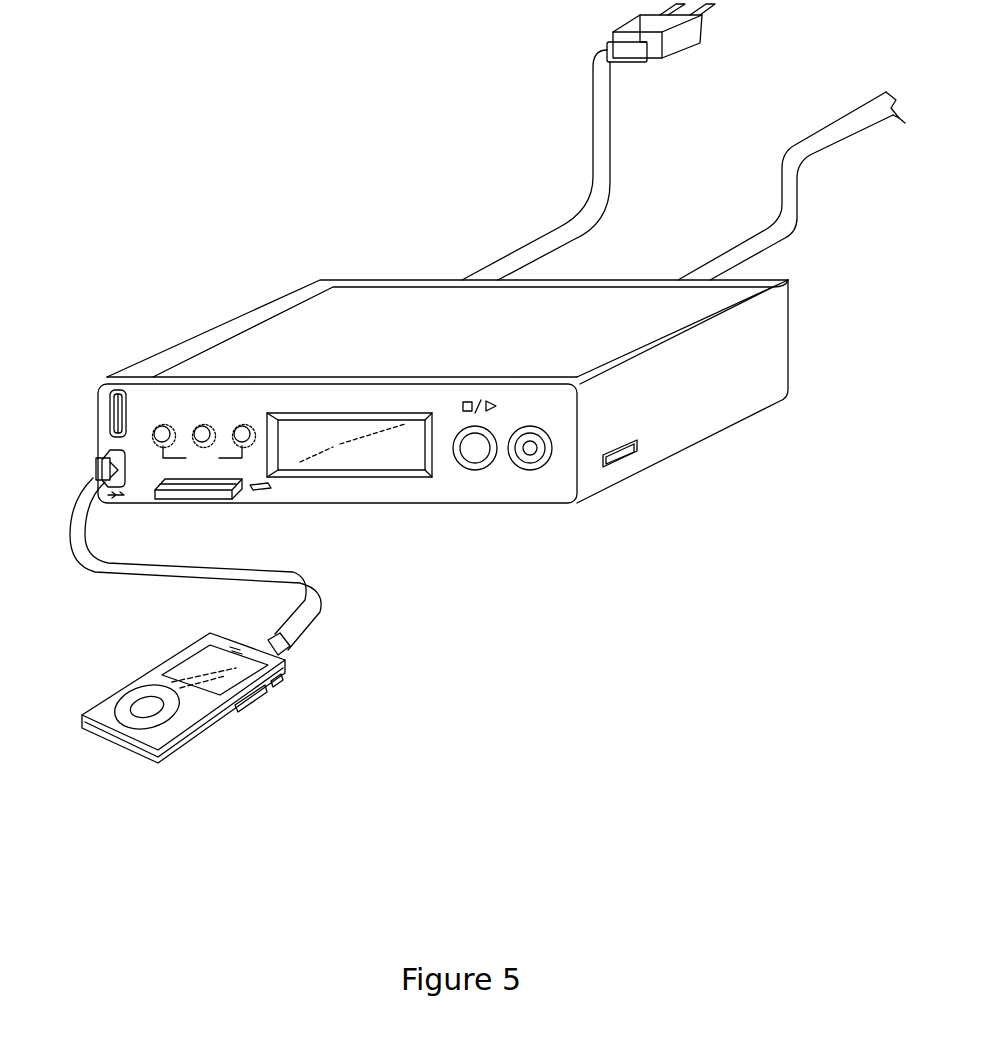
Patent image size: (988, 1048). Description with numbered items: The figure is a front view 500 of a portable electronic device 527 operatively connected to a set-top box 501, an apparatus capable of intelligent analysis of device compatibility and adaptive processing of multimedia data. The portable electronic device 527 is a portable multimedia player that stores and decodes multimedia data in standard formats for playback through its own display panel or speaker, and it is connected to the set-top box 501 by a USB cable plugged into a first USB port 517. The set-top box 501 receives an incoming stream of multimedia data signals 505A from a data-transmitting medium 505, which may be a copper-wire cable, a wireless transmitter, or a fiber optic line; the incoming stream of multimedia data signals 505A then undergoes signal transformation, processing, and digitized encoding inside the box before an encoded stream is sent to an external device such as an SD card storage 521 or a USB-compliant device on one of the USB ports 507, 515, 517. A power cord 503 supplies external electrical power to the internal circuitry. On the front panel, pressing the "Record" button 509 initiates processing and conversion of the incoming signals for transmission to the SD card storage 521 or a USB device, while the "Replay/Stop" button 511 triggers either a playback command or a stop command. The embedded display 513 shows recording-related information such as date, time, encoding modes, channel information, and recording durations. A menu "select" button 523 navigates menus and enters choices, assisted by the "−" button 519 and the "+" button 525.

The front view 500 is at (432, 896).
The set-top box 501 is at (373, 306).
The power cord 503 is at (544, 228).
The data-transmitting medium 505 is at (847, 115).
The incoming stream of multimedia data signals 505A is at (725, 227).
The USB port 507 is at (625, 471).
The "Record" button 509 is at (533, 474).
The "Replay/Stop" button 511 is at (475, 473).
The embedded display 513 is at (351, 459).
The USB port 515 is at (110, 406).
The first USB port 517 is at (100, 465).
The "−" button 519 is at (159, 447).
The SD card storage 521 is at (192, 502).
The menu "select" button 523 is at (194, 426).
The "+" button 525 is at (243, 447).
The portable electronic device 527 is at (194, 708).